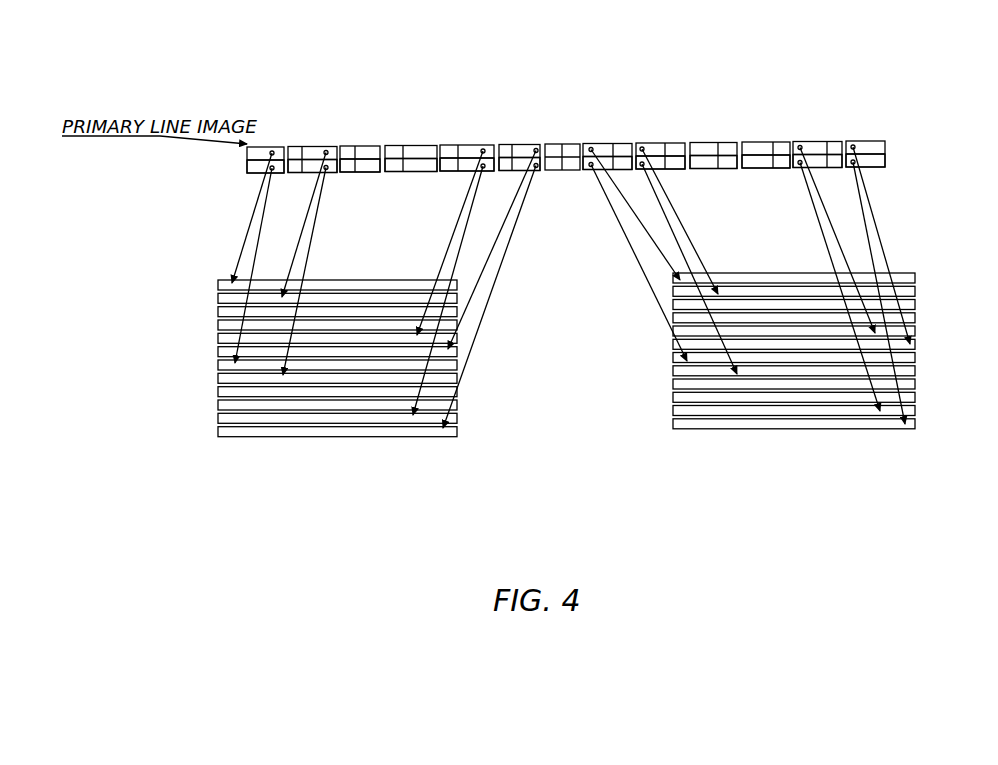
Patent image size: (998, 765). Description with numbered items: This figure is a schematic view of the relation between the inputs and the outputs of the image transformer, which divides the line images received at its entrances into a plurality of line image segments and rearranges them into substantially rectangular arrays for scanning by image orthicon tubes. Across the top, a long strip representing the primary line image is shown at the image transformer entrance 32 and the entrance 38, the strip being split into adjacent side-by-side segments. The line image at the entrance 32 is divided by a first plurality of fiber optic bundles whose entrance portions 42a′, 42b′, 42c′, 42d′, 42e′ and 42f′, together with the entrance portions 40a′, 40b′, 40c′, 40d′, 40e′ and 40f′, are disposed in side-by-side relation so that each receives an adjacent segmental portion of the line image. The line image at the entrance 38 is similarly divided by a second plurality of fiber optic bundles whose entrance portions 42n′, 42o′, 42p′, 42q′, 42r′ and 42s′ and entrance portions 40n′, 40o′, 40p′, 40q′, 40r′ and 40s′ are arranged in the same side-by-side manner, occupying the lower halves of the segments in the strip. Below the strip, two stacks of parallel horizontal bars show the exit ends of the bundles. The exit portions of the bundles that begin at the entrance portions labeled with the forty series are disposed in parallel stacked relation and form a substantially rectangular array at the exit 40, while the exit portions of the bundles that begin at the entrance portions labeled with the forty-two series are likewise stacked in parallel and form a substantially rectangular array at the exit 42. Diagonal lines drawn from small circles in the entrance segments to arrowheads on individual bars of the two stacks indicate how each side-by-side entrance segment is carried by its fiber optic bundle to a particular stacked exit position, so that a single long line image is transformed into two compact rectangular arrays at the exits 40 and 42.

The image transformer entrance 32 is at (898, 130).
The image transformer entrance 38 is at (891, 166).
The exit 40 is at (660, 433).
The exit 42 is at (473, 442).
The entrance portion 42a′ is at (258, 149).
The entrance portion 42b′ is at (313, 148).
The entrance portion 42c′ is at (360, 148).
The entrance portion 42d′ is at (410, 147).
The entrance portion 42e′ is at (463, 147).
The entrance portion 42f′ is at (513, 146).
The entrance portion 42n′ is at (248, 167).
The entrance portion 42o′ is at (308, 165).
The entrance portion 42p′ is at (373, 168).
The entrance portion 42q′ is at (428, 167).
The entrance portion 42r′ is at (487, 168).
The entrance portion 42s′ is at (522, 168).
The entrance portion 40a′ is at (610, 146).
The entrance portion 40b′ is at (663, 146).
The entrance portion 40c′ is at (717, 145).
The entrance portion 40d′ is at (773, 144).
The entrance portion 40e′ is at (830, 144).
The entrance portion 40f′ is at (905, 112).
The entrance portion 40n′ is at (605, 170).
The entrance portion 40o′ is at (658, 170).
The entrance portion 40p′ is at (717, 168).
The entrance portion 40q′ is at (773, 167).
The entrance portion 40r′ is at (825, 166).
The entrance portion 40s′ is at (886, 154).